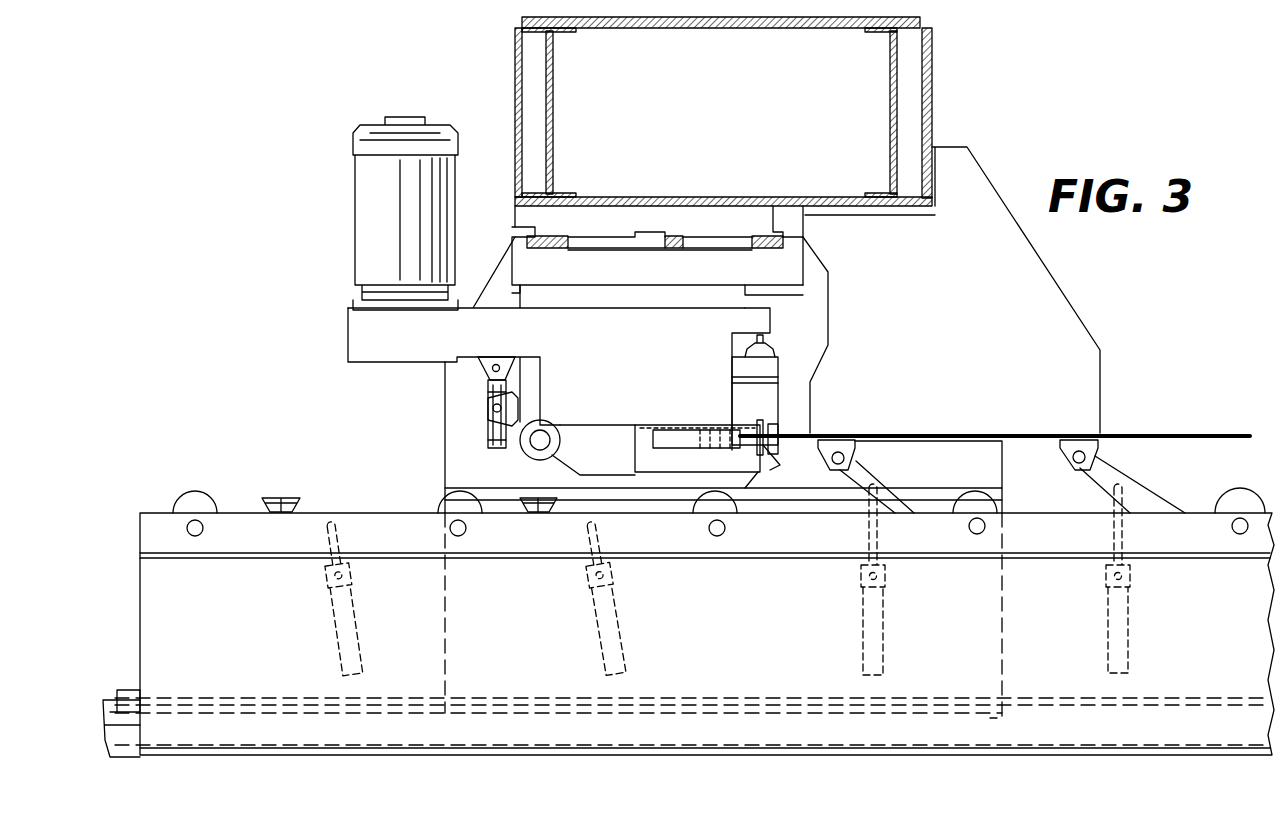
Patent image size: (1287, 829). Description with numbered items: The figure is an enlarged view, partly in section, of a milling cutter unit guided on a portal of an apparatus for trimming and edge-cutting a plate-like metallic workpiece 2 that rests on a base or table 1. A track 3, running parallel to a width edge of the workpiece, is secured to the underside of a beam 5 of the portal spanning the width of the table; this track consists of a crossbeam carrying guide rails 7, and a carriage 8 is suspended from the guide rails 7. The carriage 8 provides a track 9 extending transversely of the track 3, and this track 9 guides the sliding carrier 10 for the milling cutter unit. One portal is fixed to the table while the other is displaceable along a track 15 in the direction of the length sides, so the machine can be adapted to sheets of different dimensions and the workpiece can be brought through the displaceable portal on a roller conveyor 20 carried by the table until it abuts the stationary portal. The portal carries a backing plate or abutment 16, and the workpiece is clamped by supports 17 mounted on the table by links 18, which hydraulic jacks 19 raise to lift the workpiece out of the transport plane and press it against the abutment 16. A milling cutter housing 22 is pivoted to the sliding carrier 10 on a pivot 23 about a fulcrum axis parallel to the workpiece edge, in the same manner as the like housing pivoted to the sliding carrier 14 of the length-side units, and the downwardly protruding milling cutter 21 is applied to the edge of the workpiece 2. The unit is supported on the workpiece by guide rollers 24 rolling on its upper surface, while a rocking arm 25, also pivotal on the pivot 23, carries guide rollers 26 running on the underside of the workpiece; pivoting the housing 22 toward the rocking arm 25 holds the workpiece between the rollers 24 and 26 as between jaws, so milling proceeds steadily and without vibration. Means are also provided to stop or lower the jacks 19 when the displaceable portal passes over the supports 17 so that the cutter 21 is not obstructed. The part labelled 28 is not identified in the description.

The base or table 1 is at (687, 667).
The workpiece 2 is at (1120, 434).
The track 3 is at (702, 236).
The beam 5 is at (937, 88).
The guide rail 7 is at (564, 236).
The carriage 8 is at (540, 270).
The track 9 is at (770, 290).
The sliding carrier 10 is at (580, 383).
The sliding carrier 14 is at (130, 730).
The track 15 is at (113, 700).
The backing plate or abutment 16 is at (926, 432).
The support 17 is at (841, 438).
The link 18 is at (1138, 495).
The hydraulic jack 19 is at (345, 621).
The roller conveyor 20 is at (195, 508).
The milling cutter 21 is at (697, 440).
The milling cutter housing 22 is at (765, 395).
The pivot 23 is at (526, 441).
The guide roller 24 is at (776, 428).
The rocking arm 25 is at (758, 470).
The guide roller 26 is at (777, 446).
The pivot column 28 is at (488, 420).